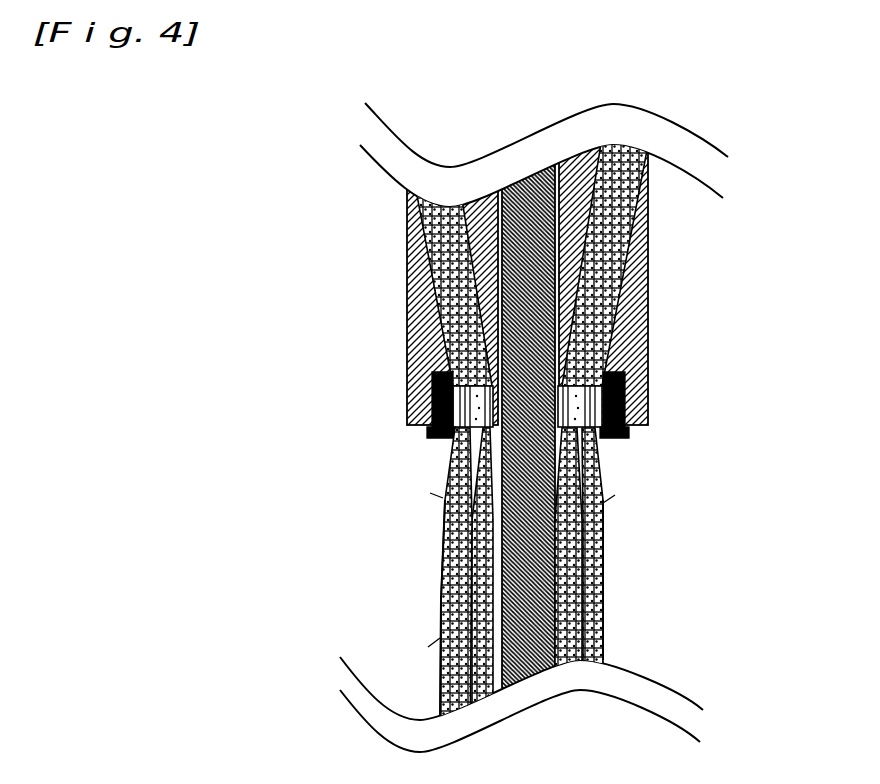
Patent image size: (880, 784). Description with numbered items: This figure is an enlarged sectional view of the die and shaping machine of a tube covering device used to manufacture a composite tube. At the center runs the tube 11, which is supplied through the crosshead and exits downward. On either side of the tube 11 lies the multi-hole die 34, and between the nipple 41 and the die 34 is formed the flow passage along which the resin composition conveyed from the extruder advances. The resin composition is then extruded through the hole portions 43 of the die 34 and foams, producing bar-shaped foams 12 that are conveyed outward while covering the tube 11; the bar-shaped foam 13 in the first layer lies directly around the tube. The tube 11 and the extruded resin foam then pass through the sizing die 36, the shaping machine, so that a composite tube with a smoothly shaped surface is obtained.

The tube 11 is at (540, 458).
The bar-shaped foams 12 is at (570, 580).
The bar-shaped foam in first layer 13 is at (588, 493).
The multi-hole die 34 is at (420, 312).
The sizing die 36 is at (436, 501).
The nipple 41 is at (500, 296).
The hole portion 43 is at (442, 397).